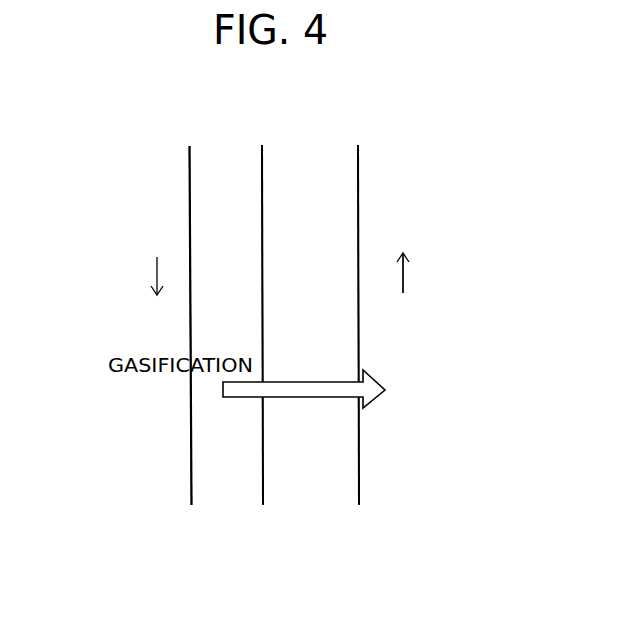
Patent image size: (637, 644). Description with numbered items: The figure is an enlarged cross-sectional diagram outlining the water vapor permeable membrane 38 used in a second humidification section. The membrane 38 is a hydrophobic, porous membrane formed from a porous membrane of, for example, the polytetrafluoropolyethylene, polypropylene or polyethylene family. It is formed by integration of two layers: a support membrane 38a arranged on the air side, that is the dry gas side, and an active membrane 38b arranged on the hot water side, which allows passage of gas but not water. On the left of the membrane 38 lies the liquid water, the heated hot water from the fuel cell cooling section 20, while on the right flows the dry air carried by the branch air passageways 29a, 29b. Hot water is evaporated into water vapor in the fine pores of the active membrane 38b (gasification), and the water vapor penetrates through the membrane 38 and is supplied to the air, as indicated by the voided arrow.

The water vapor permeable membrane 38 is at (187, 161).
The support membrane 38a is at (333, 482).
The active membrane 38b is at (230, 482).
The fuel cell cooling section 20 is at (124, 217).
The first branch air passageway 29a is at (519, 213).
The second branch air passageway 29b is at (468, 234).